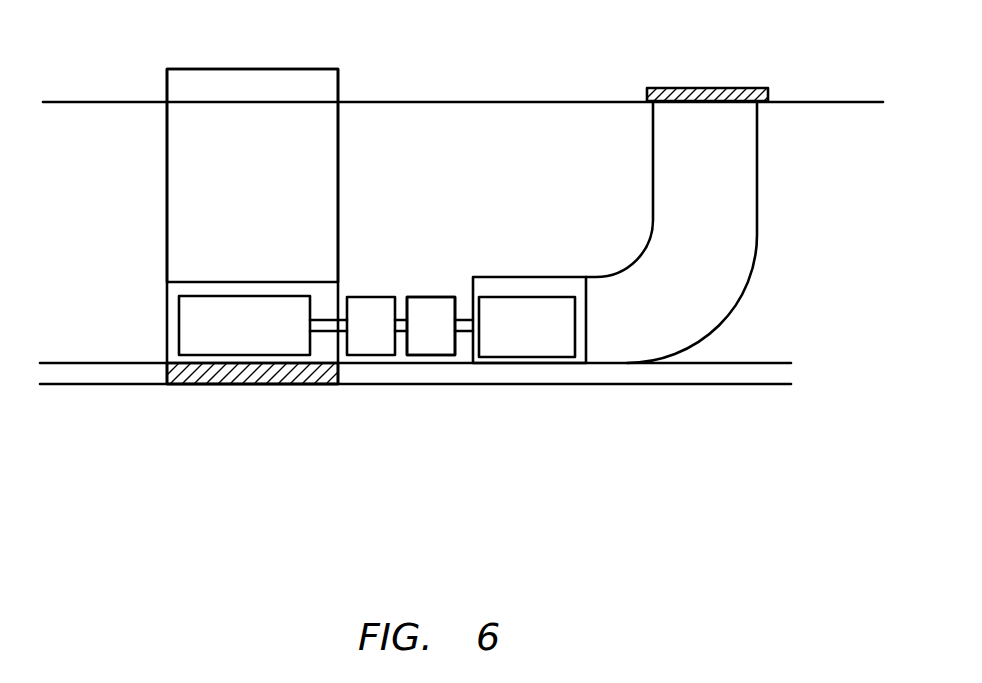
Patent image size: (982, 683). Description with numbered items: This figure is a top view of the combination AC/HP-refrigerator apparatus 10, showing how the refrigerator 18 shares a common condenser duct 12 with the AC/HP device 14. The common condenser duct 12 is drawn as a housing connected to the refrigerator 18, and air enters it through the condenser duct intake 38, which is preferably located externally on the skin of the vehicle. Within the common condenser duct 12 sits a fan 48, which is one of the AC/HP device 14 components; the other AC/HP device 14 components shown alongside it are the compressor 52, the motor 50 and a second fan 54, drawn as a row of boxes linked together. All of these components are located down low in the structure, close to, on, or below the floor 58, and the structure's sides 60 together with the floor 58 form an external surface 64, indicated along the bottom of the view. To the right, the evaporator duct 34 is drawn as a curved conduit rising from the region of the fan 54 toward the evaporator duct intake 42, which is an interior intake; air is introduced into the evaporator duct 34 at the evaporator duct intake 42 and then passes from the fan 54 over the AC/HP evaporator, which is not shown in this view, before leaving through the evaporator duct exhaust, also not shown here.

The combination AC/HP-refrigerator apparatus 10 is at (545, 472).
The common condenser duct 12 is at (165, 340).
The AC/HP device 14 is at (431, 279).
The refrigerator 18 is at (193, 187).
The evaporator duct 34 is at (758, 203).
The condenser duct intake 38 is at (222, 385).
The evaporator duct intake 42 is at (692, 88).
The fan 48 is at (203, 323).
The motor 50 is at (363, 308).
The compressor 52 is at (420, 347).
The fan 54 is at (530, 307).
The floor 58 is at (490, 122).
The sides 60 is at (715, 385).
The external surface 64 is at (613, 385).